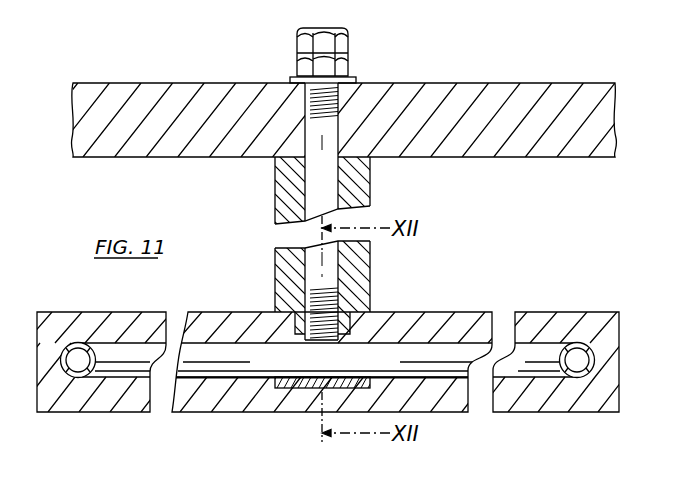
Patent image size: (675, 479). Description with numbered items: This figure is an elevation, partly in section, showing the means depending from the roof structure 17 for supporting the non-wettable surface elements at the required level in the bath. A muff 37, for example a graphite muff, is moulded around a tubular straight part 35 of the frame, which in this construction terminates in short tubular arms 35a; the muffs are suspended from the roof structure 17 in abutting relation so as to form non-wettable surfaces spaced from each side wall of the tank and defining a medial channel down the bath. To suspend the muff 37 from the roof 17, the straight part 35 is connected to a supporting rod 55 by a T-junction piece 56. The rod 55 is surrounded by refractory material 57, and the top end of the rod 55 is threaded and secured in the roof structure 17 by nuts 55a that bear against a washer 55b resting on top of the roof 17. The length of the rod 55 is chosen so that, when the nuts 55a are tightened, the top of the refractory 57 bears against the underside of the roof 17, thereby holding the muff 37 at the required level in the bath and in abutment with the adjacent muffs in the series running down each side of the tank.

The roof structure 17 is at (416, 92).
The tubular straight part 35 is at (447, 356).
The short tubular arm 35a is at (80, 378).
The muff 37 is at (196, 396).
The supporting rod 55 is at (323, 181).
The nut 55a is at (343, 37).
The washer 55b is at (350, 78).
The T-junction piece 56 is at (297, 390).
The refractory material 57 is at (284, 181).